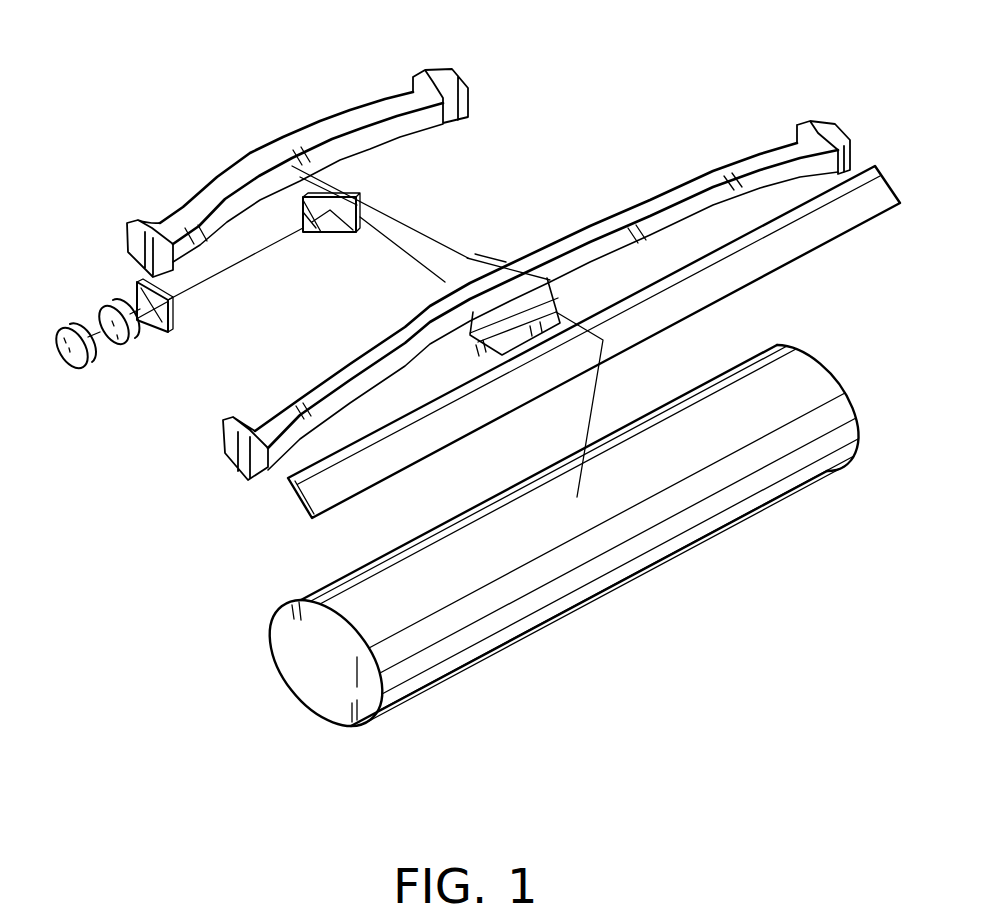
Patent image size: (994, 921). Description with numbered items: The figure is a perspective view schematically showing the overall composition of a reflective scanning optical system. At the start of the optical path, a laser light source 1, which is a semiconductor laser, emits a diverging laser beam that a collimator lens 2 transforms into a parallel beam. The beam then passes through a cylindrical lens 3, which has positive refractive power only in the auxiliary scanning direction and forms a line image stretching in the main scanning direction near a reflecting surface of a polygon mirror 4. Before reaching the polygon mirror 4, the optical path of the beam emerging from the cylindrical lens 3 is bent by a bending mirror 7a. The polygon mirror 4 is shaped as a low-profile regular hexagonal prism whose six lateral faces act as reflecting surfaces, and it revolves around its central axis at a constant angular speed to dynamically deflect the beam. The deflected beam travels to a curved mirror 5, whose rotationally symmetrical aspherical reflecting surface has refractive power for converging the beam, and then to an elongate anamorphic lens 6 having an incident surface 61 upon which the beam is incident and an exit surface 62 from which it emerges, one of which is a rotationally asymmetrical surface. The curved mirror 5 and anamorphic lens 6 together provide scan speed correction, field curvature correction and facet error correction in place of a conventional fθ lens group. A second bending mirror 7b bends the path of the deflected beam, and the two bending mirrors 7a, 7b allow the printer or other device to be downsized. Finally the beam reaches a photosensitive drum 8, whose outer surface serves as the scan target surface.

The laser light source 1 is at (74, 368).
The collimator lens 2 is at (118, 346).
The cylindrical lens 3 is at (137, 300).
The polygon mirror 4 is at (492, 260).
The curved mirror 5 is at (433, 70).
The anamorphic lens 6 is at (818, 132).
The incident surface 61 is at (625, 217).
The exit surface 62 is at (717, 205).
The bending mirror 7a is at (328, 228).
The bending mirror 7b is at (760, 267).
The photosensitive drum 8 is at (562, 593).